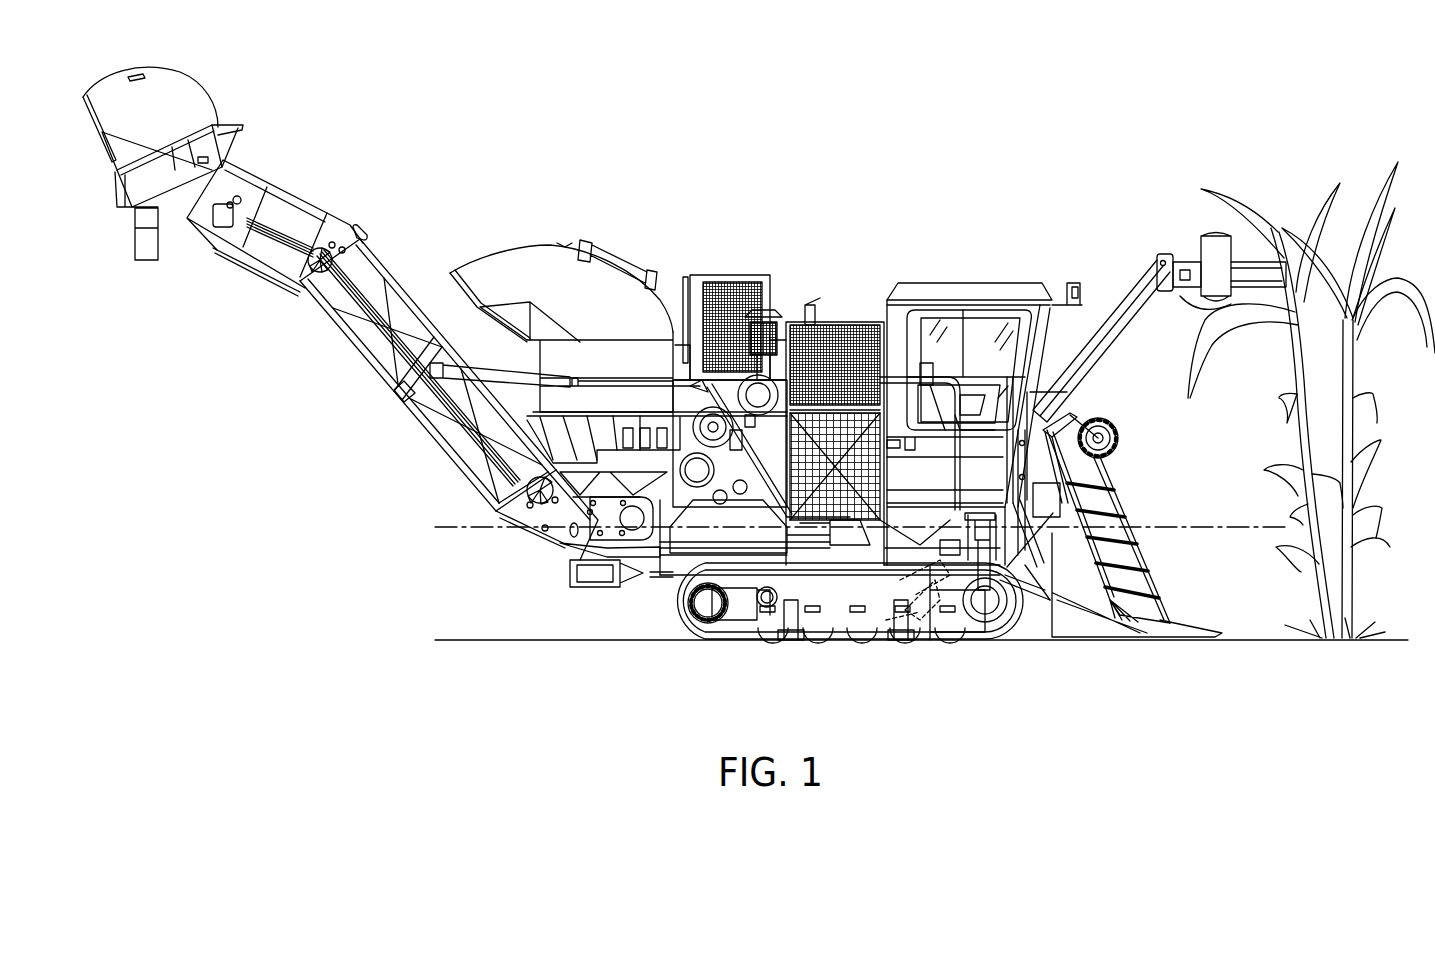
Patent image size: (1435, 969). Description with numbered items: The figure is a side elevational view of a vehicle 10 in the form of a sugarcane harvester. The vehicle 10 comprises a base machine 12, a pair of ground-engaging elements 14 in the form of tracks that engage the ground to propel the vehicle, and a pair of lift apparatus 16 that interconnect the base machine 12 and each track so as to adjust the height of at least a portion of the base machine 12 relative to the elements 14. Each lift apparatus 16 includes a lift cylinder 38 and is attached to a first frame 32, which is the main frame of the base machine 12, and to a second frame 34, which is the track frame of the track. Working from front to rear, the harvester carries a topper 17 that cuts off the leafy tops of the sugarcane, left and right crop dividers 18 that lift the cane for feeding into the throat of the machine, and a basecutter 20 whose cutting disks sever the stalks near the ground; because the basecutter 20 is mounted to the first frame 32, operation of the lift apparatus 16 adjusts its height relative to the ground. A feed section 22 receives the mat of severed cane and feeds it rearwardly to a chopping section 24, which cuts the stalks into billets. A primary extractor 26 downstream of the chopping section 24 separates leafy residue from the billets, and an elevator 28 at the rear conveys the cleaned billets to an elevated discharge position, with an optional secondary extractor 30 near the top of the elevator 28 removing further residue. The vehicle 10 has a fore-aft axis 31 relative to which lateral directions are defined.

The vehicle 10 is at (1026, 90).
The base machine 12 is at (1049, 200).
The ground-engaging elements 14 is at (688, 636).
The lift apparatus 16 is at (1048, 592).
The topper 17 is at (1218, 243).
The crop divider 18 is at (1160, 529).
The basecutter 20 is at (938, 633).
The feed section 22 is at (738, 500).
The chopping section 24 is at (728, 510).
The primary extractor 26 is at (537, 262).
The elevator 28 is at (413, 410).
The secondary extractor 30 is at (173, 103).
The fore-aft axis 31 is at (1226, 534).
The first frame 32 is at (788, 518).
The second frame 34 is at (948, 607).
The lift cylinder 38 is at (977, 597).